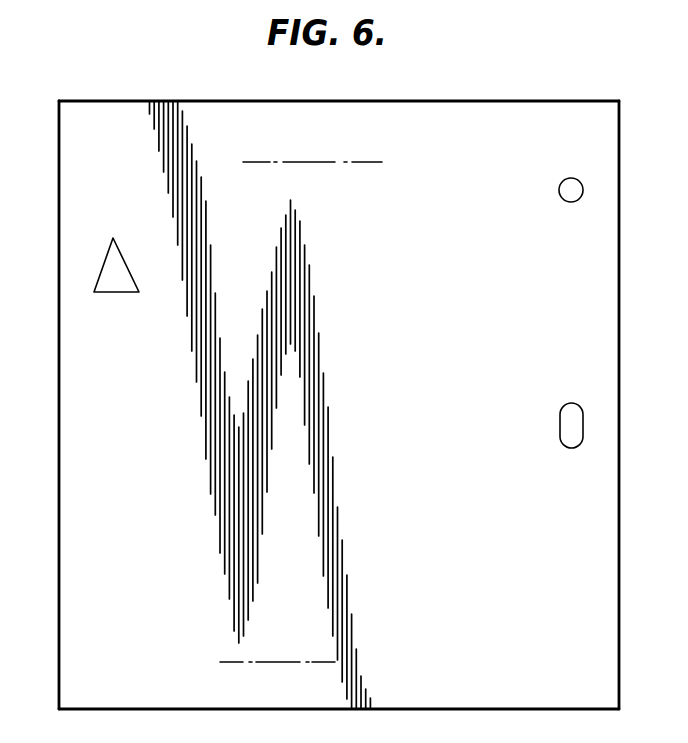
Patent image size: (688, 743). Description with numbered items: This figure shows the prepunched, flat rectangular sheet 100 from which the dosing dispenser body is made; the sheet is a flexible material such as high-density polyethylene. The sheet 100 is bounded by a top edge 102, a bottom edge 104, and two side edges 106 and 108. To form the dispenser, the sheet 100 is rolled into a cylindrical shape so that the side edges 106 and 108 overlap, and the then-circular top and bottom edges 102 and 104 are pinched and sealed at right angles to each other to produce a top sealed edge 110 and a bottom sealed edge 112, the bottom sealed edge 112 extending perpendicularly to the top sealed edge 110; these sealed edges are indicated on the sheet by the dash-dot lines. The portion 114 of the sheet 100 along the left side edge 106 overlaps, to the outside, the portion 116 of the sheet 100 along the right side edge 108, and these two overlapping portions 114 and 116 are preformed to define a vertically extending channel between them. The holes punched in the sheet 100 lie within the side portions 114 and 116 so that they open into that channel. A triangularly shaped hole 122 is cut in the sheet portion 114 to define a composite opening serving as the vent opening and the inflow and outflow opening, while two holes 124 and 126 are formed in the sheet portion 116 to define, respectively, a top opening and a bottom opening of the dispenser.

The rectangular sheet 100 is at (153, 101).
The top edge 102 is at (482, 100).
The bottom edge 104 is at (465, 709).
The side edge 106 is at (58, 353).
The side edge 108 is at (618, 264).
The top sealed edge 110 is at (314, 162).
The bottom sealed edge 112 is at (243, 662).
The portion of the sheet along the left side edge 114 is at (78, 473).
The portion of the sheet along the right side edge 116 is at (568, 627).
The triangularly shaped hole 122 is at (129, 264).
The hole 124 is at (575, 188).
The hole 126 is at (577, 410).